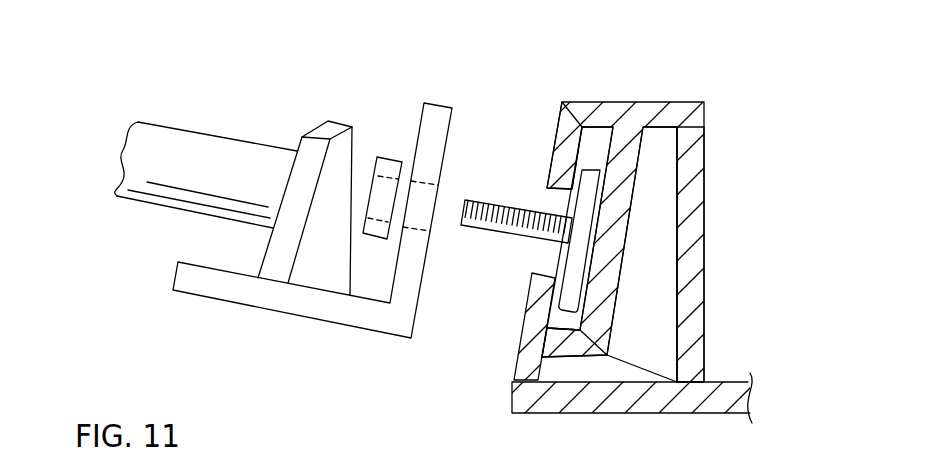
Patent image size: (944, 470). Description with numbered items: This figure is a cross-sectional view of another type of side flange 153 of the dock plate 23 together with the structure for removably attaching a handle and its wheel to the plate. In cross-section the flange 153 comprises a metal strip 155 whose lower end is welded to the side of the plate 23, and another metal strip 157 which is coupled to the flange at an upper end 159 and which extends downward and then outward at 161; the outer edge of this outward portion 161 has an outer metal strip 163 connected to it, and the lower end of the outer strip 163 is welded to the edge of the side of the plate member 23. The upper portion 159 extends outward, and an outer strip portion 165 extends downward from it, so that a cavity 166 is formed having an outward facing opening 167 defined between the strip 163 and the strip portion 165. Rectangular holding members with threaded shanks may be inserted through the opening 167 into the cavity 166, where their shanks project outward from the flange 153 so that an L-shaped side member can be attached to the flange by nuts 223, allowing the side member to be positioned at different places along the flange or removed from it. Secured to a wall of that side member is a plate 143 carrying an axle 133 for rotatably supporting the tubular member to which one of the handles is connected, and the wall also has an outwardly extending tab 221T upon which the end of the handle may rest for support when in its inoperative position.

The axle 133 is at (186, 145).
The plate 143 is at (293, 140).
The nuts 223 is at (393, 160).
The outwardly extending tab 221T is at (177, 265).
The flange 153 is at (799, 238).
The upper end 159 is at (675, 103).
The outer strip portion 165 is at (555, 125).
The cavity 166 is at (600, 146).
The metal strip 157 is at (640, 168).
The metal strip 155 is at (705, 363).
The outward extension 161 is at (570, 357).
The outer metal strip 163 is at (515, 360).
The plate 23 is at (718, 381).
The outward facing opening 167 is at (553, 207).